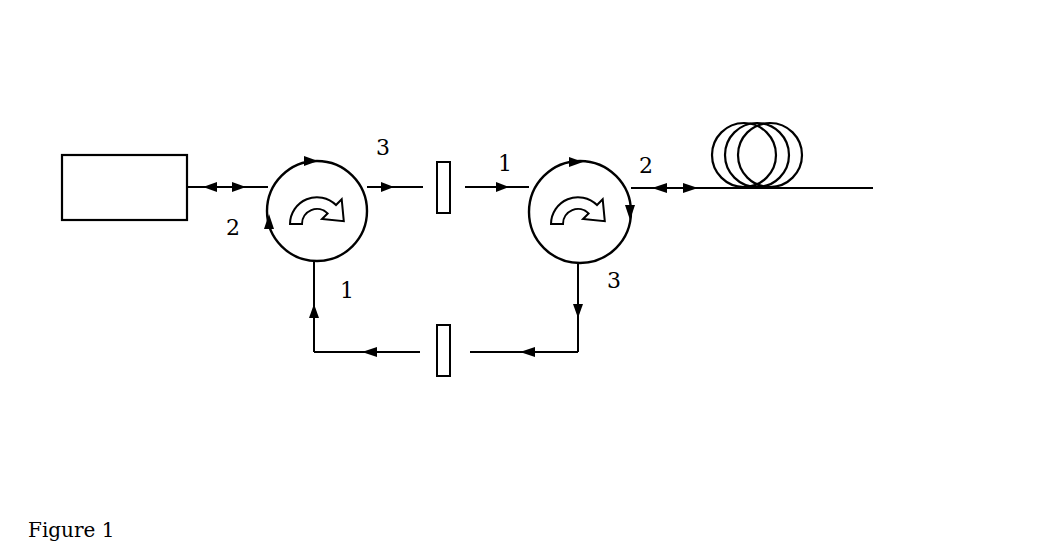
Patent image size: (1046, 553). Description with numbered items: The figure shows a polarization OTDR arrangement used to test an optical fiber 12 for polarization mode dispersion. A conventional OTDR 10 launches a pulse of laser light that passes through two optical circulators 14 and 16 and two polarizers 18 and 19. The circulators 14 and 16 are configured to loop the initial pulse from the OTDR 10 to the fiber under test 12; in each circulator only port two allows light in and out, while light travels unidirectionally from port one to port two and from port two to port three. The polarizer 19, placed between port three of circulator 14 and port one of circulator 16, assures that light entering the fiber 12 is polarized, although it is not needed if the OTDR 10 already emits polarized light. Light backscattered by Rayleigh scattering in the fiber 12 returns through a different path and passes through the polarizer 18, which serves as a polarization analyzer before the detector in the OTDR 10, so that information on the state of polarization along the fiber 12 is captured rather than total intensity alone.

The OTDR 10 is at (128, 220).
The optical fiber 12 is at (752, 122).
The optical circulator 14 is at (311, 158).
The optical circulator 16 is at (573, 162).
The polarizer 18 is at (450, 362).
The polarizer 19 is at (441, 162).